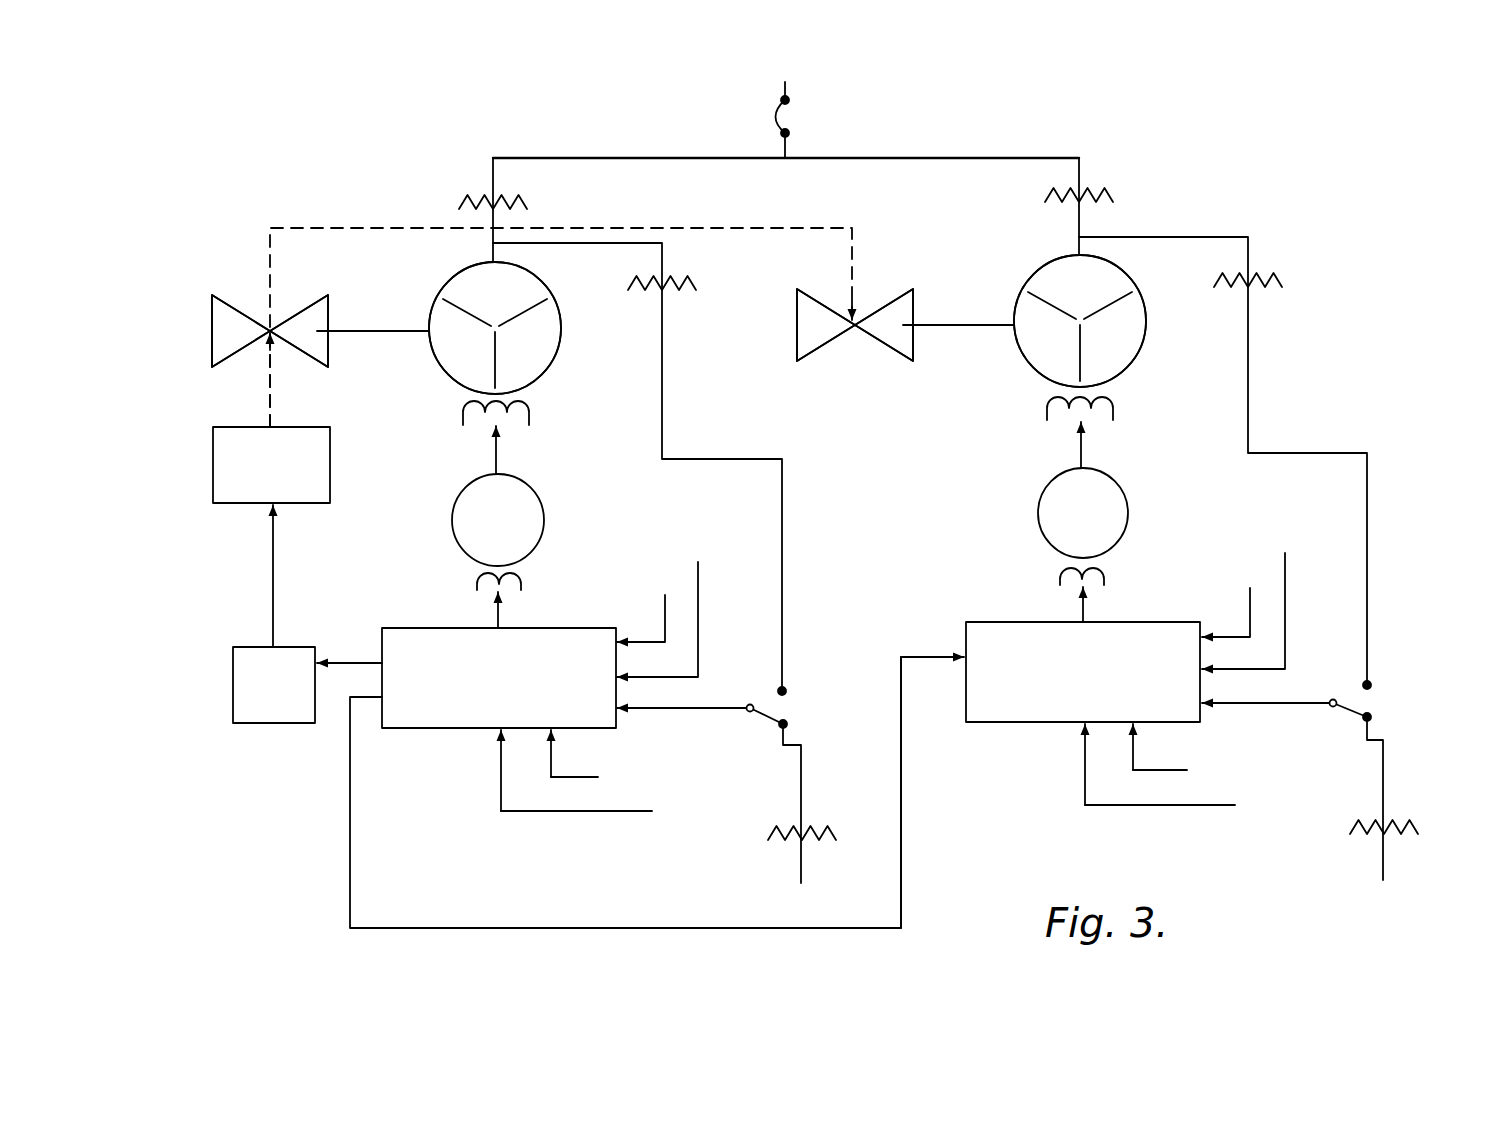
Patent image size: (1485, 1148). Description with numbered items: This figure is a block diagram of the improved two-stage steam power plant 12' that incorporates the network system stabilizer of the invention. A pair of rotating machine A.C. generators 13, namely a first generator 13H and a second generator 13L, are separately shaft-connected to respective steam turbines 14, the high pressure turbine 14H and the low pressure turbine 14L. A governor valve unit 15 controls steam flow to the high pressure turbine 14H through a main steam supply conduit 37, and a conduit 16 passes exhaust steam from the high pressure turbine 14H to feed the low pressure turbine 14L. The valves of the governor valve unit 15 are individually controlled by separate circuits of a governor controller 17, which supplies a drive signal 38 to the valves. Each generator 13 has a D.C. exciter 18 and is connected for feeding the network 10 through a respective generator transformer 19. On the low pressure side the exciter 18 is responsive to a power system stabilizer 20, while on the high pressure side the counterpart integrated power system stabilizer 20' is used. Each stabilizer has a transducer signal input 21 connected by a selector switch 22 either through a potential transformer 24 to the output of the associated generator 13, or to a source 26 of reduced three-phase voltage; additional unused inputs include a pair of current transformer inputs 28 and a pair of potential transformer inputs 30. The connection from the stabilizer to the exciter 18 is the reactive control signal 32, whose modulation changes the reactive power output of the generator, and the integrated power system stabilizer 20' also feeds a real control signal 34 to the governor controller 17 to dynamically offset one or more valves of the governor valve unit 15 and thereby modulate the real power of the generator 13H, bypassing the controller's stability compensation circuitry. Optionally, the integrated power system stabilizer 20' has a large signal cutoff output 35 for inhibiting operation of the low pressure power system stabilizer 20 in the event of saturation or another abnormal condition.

The network 10 is at (887, 158).
The improved steam power plant 12' is at (954, 792).
The rotating machine A.C. generator 13 is at (548, 284).
The first generator 13H is at (545, 376).
The second generator 13L is at (1130, 369).
The steam turbine 14 is at (243, 204).
The high pressure turbine 14H is at (328, 358).
The low pressure turbine 14L is at (913, 352).
The governor valve unit 15 is at (330, 458).
The conduit 16 is at (710, 228).
The governor controller 17 is at (277, 723).
The D.C. exciter 18 is at (535, 490).
The generator transformer 19 is at (466, 197).
The power system stabilizer 20 is at (1161, 719).
The integrated power system stabilizer 20' is at (578, 725).
The transducer signal input 21 is at (650, 710).
The selector switch 22 is at (752, 702).
The potential transformer 24 is at (633, 290).
The source of reduced voltage 26 is at (803, 870).
The current transformer inputs 28 is at (647, 677).
The potential transformer inputs 30 is at (638, 640).
The reactive control signal 32 is at (496, 608).
The real control signal 34 is at (370, 660).
The large signal cutoff output 35 is at (350, 832).
The main steam supply conduit 37 is at (272, 388).
The drive signal 38 is at (275, 603).